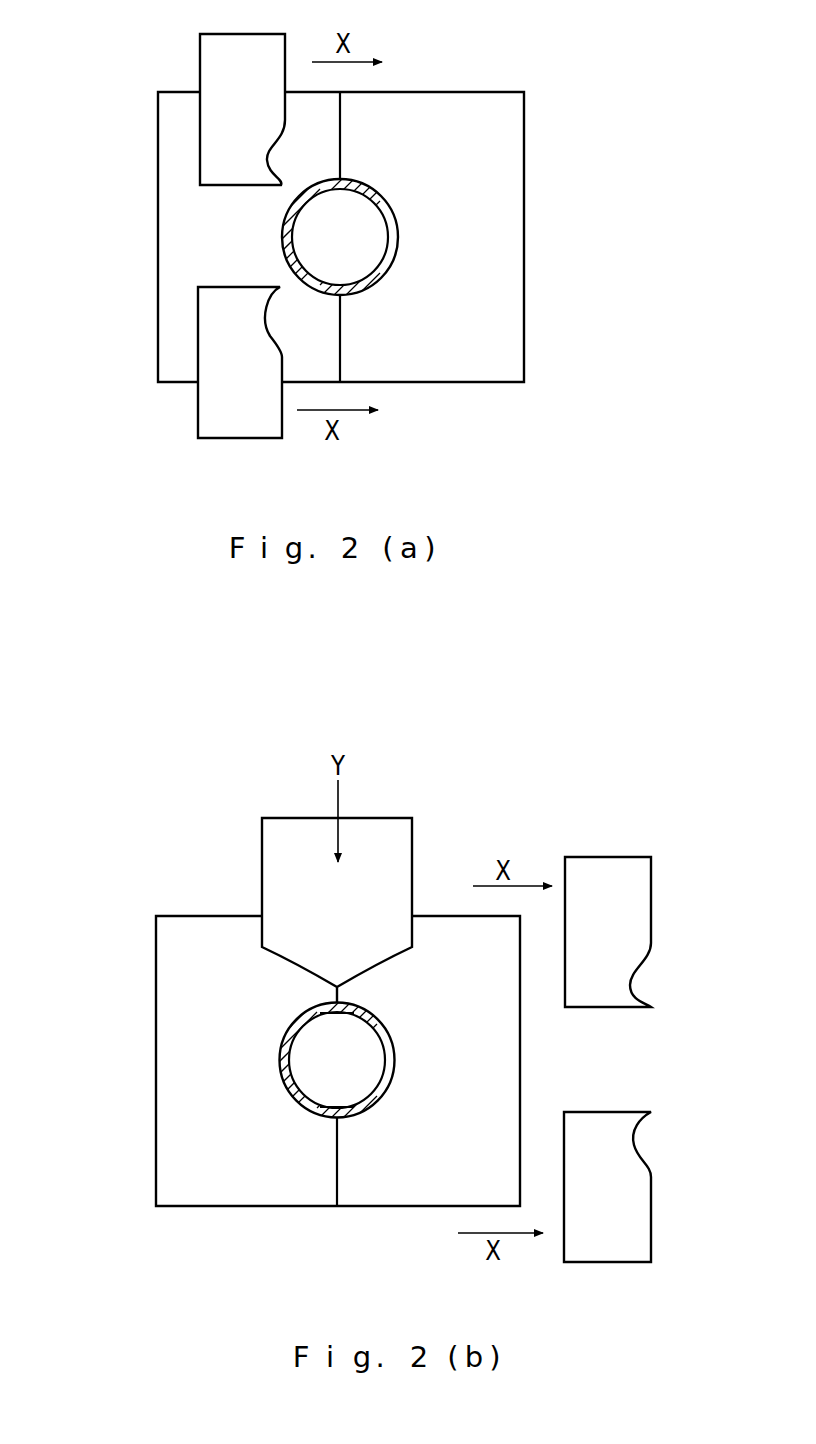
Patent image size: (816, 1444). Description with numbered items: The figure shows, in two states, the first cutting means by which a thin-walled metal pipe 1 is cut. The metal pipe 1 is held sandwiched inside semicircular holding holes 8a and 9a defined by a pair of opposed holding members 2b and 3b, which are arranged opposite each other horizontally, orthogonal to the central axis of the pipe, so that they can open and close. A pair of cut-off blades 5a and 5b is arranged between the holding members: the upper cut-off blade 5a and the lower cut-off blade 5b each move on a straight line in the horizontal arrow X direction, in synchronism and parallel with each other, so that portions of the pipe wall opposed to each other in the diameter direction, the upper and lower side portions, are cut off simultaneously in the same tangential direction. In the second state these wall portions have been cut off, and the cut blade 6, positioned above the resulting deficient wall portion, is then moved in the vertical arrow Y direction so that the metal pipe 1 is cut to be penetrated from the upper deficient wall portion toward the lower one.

In FIG. 2A, the metal pipe 1 is at (392, 250).
In FIG. 2B, the metal pipe 1 is at (278, 1062).
In FIG. 2A, the holding member 2b is at (175, 258).
In FIG. 2B, the holding member 2b is at (180, 1050).
In FIG. 2A, the holding member 3b is at (505, 197).
In FIG. 2B, the holding member 3b is at (488, 1052).
In FIG. 2A, the cut-off blade 5a is at (210, 68).
In FIG. 2B, the cut-off blade 5a is at (633, 902).
In FIG. 2A, the cut-off blade 5b is at (213, 415).
In FIG. 2B, the cut-off blade 5b is at (632, 1217).
In FIG. 2B, the cut blade 6 is at (402, 852).
In FIG. 2A, the holding hole 8a is at (370, 285).
In FIG. 2B, the holding hole 8a is at (382, 1095).
In FIG. 2A, the holding hole 9a is at (286, 233).
In FIG. 2B, the holding hole 9a is at (300, 1107).